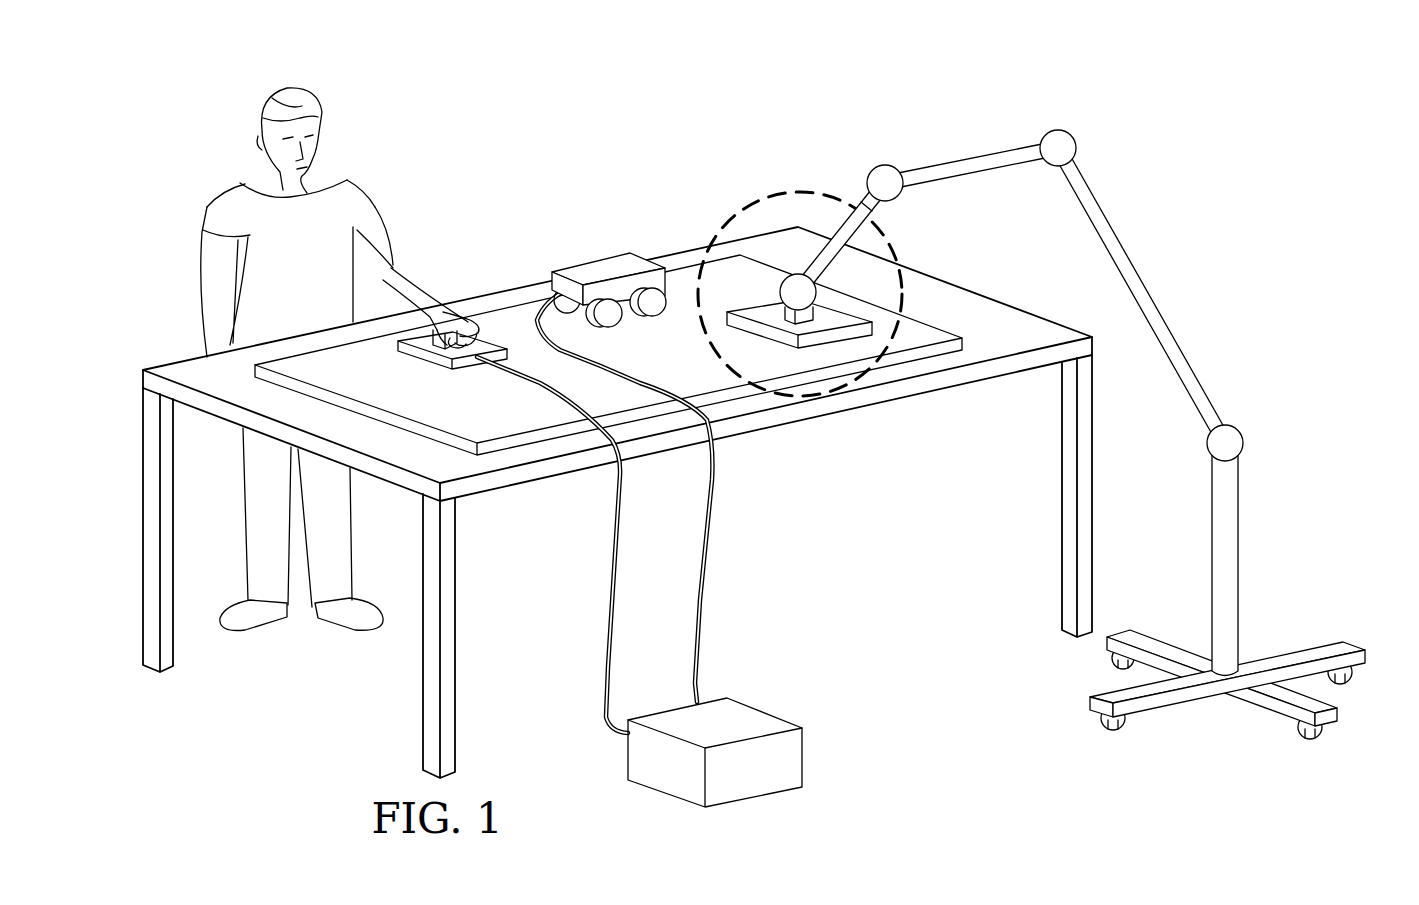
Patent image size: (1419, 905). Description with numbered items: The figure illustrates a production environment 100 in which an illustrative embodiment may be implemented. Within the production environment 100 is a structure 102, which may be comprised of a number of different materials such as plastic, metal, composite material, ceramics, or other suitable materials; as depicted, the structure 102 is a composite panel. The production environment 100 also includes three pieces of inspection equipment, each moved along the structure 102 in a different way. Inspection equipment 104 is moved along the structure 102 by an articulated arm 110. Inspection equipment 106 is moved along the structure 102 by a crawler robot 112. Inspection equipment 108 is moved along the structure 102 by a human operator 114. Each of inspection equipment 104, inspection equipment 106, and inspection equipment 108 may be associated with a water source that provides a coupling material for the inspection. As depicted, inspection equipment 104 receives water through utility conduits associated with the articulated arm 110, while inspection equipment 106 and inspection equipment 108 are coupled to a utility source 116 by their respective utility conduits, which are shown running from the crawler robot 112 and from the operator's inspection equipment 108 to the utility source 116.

The production environment 100 is at (680, 97).
The structure 102 is at (503, 320).
The inspection equipment 104 is at (850, 280).
The inspection equipment 106 is at (556, 244).
The inspection equipment 108 is at (397, 343).
The articulated arm 110 is at (1150, 293).
The crawler robot 112 is at (610, 258).
The human operator 114 is at (178, 195).
The utility source 116 is at (802, 757).